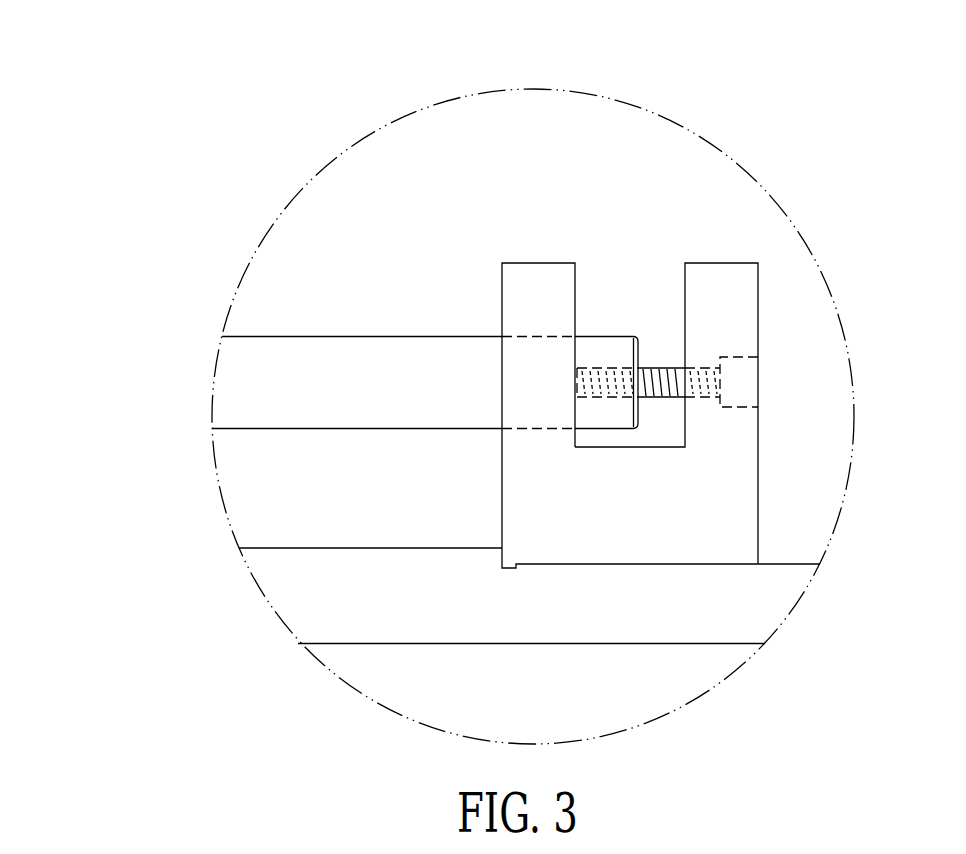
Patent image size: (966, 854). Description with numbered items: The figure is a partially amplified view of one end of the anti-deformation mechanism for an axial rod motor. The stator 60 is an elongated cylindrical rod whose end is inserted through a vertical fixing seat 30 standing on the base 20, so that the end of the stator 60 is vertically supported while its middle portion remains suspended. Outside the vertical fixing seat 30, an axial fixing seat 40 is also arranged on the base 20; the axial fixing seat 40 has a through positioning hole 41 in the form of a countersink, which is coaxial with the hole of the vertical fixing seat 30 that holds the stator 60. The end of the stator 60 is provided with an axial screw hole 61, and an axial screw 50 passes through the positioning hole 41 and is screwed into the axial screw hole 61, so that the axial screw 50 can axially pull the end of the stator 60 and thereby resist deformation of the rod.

The base 20 is at (398, 630).
The vertical fixing seat 30 is at (533, 262).
The axial fixing seat 40 is at (732, 267).
The through positioning hole 41 is at (702, 367).
The axial screw 50 is at (752, 378).
The stator 60 is at (336, 340).
The axial screw hole 61 is at (610, 366).